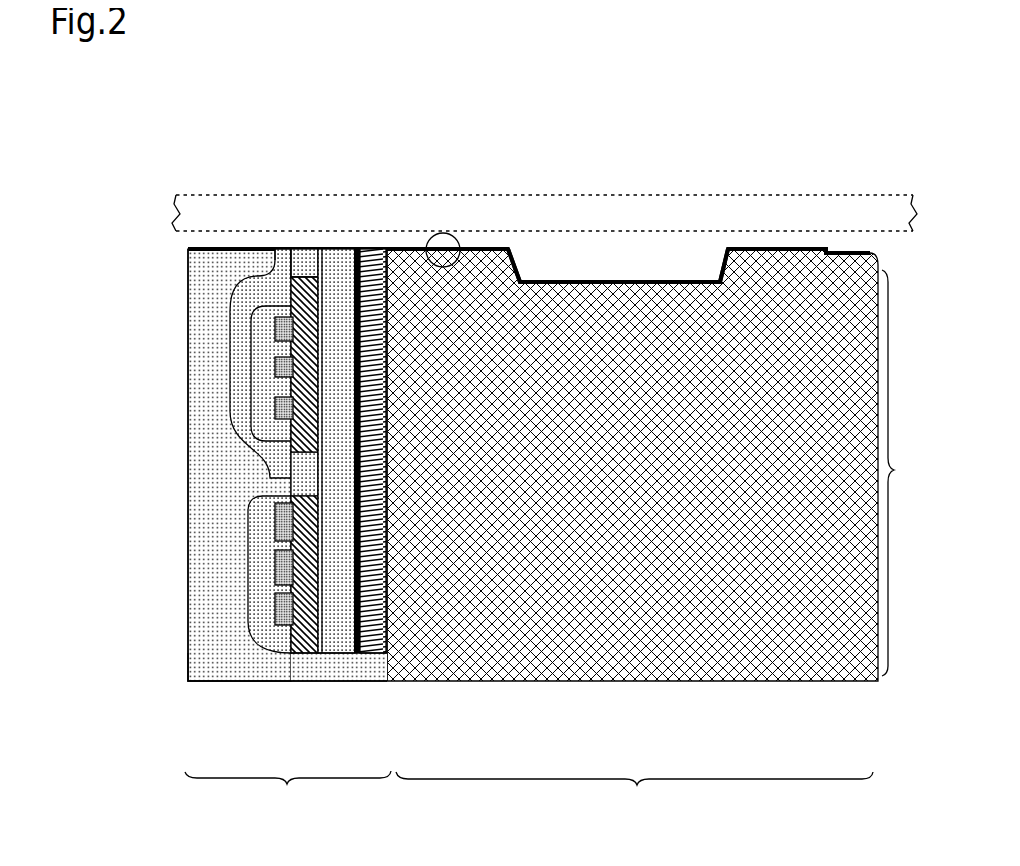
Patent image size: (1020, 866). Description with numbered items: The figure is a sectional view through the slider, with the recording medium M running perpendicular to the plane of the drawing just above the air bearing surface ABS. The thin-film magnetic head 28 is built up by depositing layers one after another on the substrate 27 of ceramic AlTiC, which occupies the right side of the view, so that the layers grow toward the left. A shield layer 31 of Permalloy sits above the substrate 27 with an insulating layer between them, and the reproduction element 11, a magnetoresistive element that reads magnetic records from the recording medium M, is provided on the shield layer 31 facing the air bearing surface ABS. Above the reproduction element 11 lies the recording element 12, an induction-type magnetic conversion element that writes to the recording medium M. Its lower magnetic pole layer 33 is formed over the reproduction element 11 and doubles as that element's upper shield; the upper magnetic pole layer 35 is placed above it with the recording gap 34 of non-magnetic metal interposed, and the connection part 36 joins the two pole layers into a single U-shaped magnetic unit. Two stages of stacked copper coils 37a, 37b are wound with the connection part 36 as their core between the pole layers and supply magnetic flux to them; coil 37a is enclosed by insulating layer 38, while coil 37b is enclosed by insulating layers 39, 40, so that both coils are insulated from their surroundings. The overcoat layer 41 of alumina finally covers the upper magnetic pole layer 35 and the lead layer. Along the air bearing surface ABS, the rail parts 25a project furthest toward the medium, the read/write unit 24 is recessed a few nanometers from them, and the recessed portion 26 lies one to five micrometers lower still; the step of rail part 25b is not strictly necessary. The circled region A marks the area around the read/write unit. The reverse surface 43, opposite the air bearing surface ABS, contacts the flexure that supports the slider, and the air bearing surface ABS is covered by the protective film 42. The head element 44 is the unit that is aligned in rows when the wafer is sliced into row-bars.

The recording element 12 is at (294, 146).
The reproduction element 11 is at (352, 241).
The read/write unit 24 is at (488, 241).
The rail part 25a is at (757, 241).
The rail part 25b is at (847, 245).
The recessed portion 26 is at (658, 274).
The substrate 27 is at (634, 793).
The thin-film magnetic head 28 is at (288, 792).
The shield layer 31 is at (370, 647).
The lower magnetic pole layer 33 is at (338, 241).
The recording gap 34 is at (308, 241).
The upper magnetic pole layer 35 is at (262, 241).
The connection part 36 is at (260, 468).
The coil 37a is at (267, 324).
The coil 37b is at (267, 396).
The insulating layer 38 is at (283, 293).
The insulating layer 39 is at (243, 373).
The insulating layer 40 is at (240, 558).
The overcoat layer 41 is at (180, 648).
The protective film 42 is at (180, 241).
The reverse surface 43 is at (680, 678).
The head element 44 is at (904, 473).
The region A is at (450, 232).
The recording medium M is at (619, 187).
The air bearing surface ABS is at (730, 241).